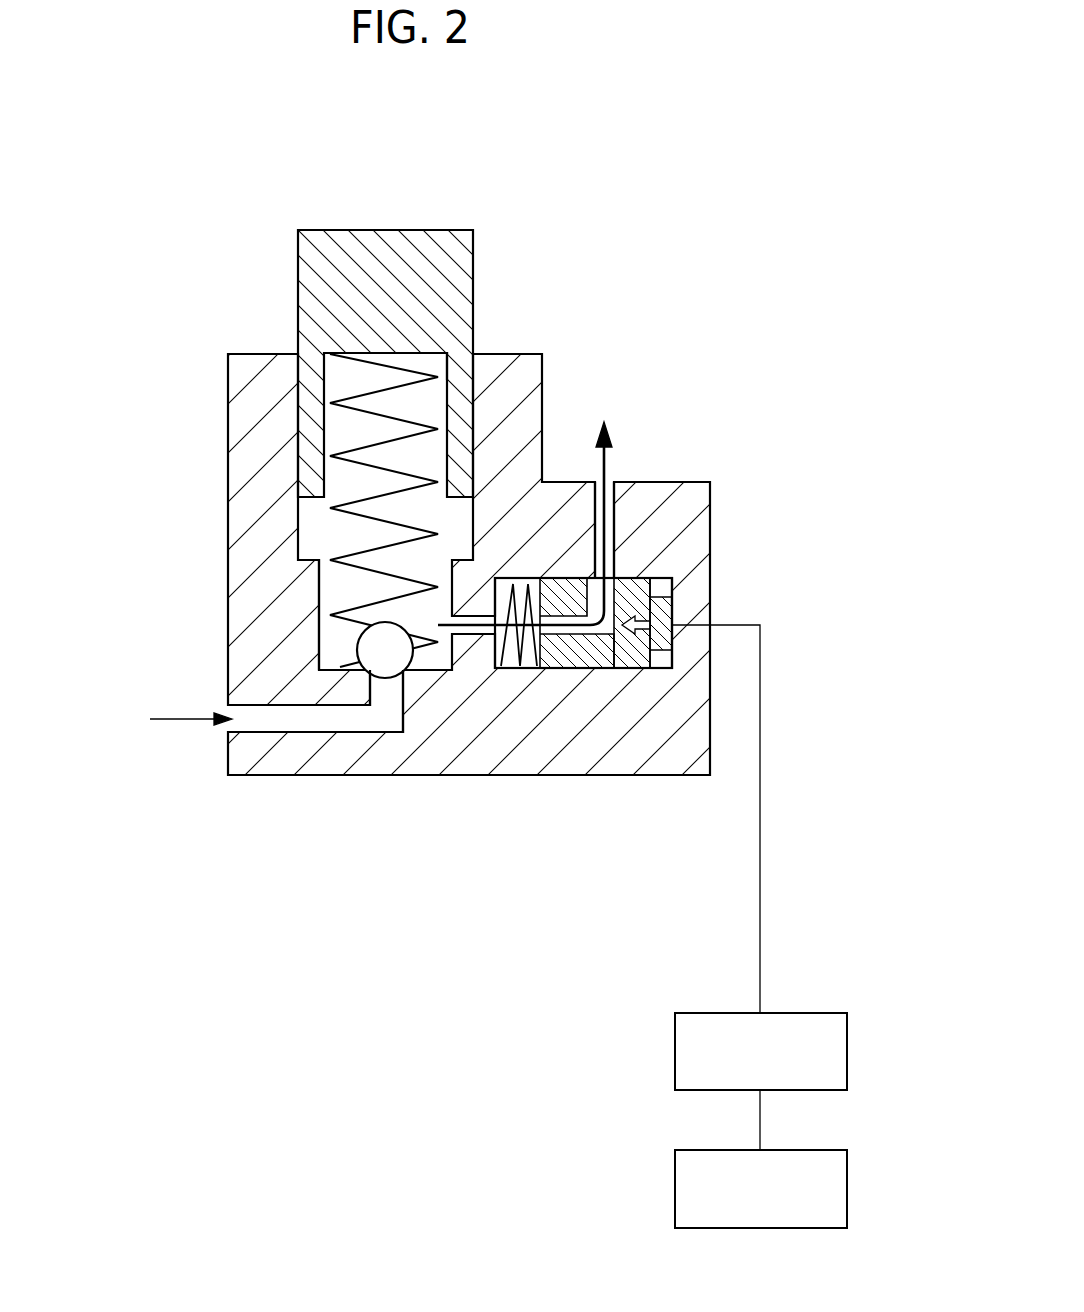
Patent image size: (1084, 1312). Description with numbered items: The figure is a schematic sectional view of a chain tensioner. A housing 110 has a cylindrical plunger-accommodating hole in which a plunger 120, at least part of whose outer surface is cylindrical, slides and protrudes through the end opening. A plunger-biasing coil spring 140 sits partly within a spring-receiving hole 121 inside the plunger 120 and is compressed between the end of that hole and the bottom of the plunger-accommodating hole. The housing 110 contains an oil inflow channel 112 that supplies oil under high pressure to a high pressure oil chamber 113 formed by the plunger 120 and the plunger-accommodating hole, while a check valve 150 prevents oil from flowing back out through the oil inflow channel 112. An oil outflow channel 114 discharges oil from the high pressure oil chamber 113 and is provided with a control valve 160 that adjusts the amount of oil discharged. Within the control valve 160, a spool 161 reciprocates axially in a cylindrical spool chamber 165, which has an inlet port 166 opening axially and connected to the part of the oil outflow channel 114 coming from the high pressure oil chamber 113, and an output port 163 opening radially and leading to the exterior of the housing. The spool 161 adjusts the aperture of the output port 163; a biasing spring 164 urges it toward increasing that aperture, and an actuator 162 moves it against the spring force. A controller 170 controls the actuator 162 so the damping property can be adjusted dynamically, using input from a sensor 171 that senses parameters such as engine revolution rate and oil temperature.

The housing 110 is at (260, 410).
The oil inflow channel 112 is at (295, 720).
The high pressure oil chamber 113 is at (323, 530).
The oil outflow channel 114 is at (607, 518).
The plunger 120 is at (393, 248).
The spring-receiving hole 121 is at (447, 397).
The plunger-biasing coil spring 140 is at (372, 393).
The check valve 150 is at (367, 643).
The control valve 160 is at (588, 749).
The spool 161 is at (582, 648).
The actuator 162 is at (677, 722).
The output port 163 is at (607, 585).
The biasing spring 164 is at (503, 668).
The spool chamber 165 is at (527, 670).
The inlet port 166 is at (480, 637).
The controller 170 is at (675, 1042).
The sensor 171 is at (675, 1185).